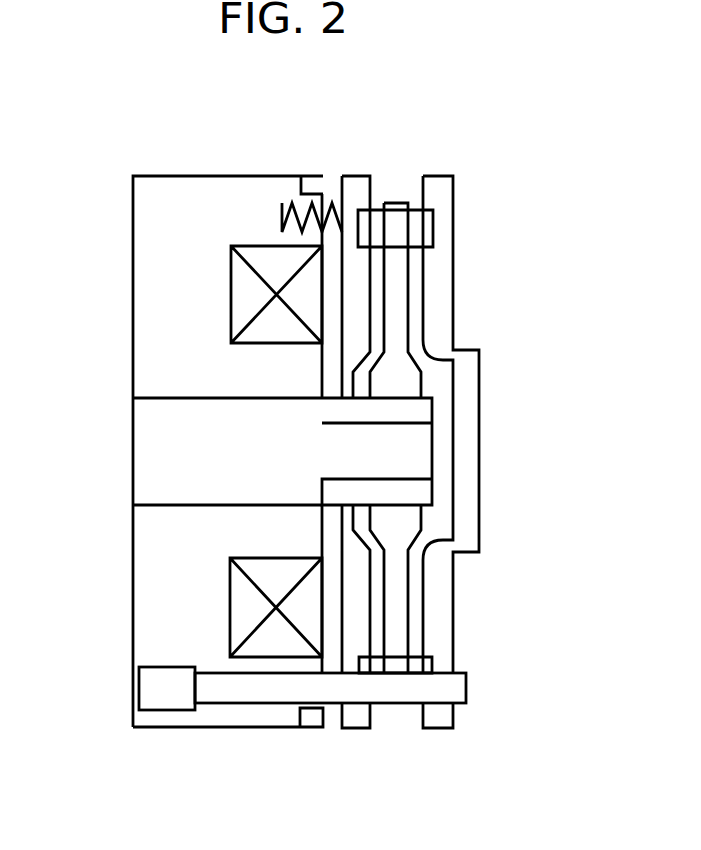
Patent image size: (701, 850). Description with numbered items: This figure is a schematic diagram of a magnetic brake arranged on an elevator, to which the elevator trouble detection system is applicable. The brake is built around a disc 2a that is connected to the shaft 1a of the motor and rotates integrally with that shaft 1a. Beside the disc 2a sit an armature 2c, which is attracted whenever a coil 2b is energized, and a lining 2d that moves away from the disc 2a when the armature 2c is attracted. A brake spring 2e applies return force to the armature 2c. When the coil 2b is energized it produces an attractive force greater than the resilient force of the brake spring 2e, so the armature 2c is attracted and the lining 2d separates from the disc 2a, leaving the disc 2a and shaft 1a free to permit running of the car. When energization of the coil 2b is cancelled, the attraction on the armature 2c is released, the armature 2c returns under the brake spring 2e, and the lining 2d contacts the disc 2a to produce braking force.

The shaft 1a is at (150, 441).
The disc 2a is at (397, 316).
The coil 2b is at (231, 298).
The armature 2c is at (346, 176).
The lining 2d is at (375, 222).
The brake spring 2e is at (282, 223).